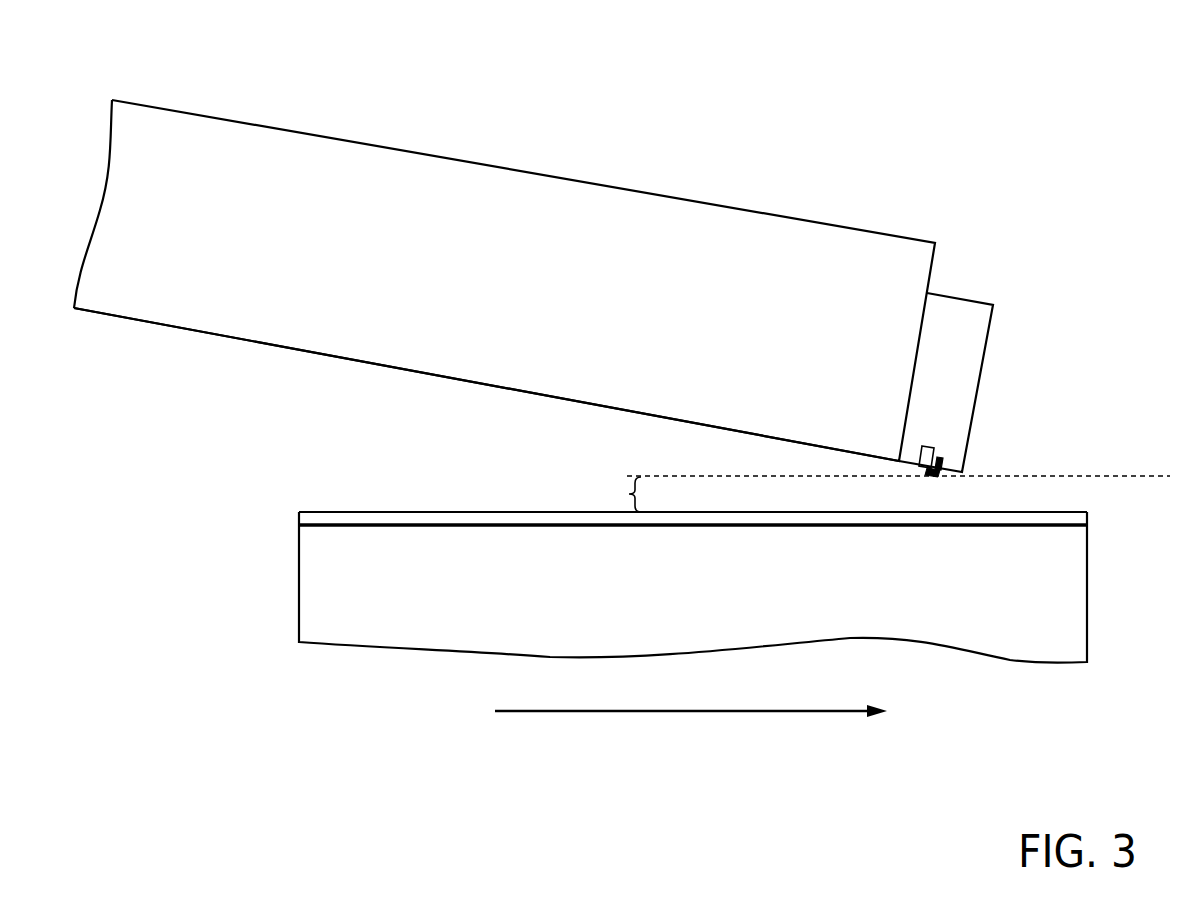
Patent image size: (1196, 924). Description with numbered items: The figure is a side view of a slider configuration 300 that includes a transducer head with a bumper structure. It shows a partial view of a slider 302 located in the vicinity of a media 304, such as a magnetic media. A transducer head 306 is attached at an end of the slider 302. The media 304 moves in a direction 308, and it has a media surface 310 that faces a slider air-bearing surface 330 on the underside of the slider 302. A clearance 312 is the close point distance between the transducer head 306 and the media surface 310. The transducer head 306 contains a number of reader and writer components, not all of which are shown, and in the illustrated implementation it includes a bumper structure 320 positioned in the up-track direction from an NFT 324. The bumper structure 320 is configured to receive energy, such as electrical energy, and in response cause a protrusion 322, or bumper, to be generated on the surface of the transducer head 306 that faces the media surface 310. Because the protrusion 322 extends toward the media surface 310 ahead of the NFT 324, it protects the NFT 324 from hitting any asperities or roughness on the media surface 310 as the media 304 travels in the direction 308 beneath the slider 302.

The slider configuration 300 is at (121, 769).
The slider 302 is at (366, 205).
The media 304 is at (283, 639).
The transducer head 306 is at (989, 286).
The direction 308 is at (562, 724).
The media surface 310 is at (338, 495).
The clearance 312 is at (612, 484).
The bumper structure 320 is at (952, 440).
The protrusion 322 is at (947, 480).
The NFT 324 is at (962, 469).
The slider air-bearing surface 330 is at (134, 334).